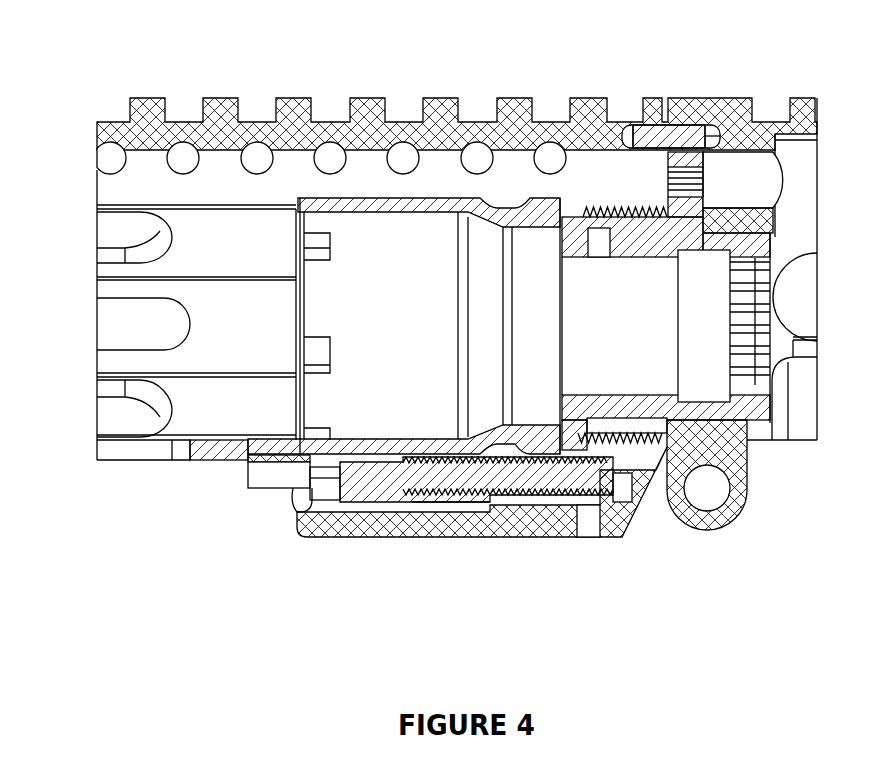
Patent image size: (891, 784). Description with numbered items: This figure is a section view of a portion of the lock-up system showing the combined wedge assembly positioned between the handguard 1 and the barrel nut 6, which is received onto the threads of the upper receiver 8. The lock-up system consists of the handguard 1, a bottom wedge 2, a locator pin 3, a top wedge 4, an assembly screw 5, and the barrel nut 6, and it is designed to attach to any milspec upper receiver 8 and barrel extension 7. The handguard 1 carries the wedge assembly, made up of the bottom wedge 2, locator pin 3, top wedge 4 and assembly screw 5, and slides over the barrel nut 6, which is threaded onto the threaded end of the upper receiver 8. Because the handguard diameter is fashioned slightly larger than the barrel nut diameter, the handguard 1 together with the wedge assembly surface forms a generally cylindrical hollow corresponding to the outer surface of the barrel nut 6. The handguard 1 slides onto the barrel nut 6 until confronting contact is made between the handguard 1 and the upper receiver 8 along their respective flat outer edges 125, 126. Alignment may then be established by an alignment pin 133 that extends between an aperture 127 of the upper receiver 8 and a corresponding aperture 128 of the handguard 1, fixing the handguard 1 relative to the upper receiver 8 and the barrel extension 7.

The handguard 1 is at (370, 132).
The bottom wedge 2 is at (623, 523).
The locator pin 3 is at (588, 520).
The top wedge 4 is at (387, 458).
The assembly screw 5 is at (438, 480).
The barrel nut 6 is at (383, 363).
The barrel extension 7 is at (665, 335).
The upper receiver 8 is at (793, 122).
The flat outer edge 125 is at (653, 128).
The flat outer edge 126 is at (677, 138).
The aperture 127 is at (708, 140).
The aperture 128 is at (630, 138).
The alignment pin 133 is at (712, 130).